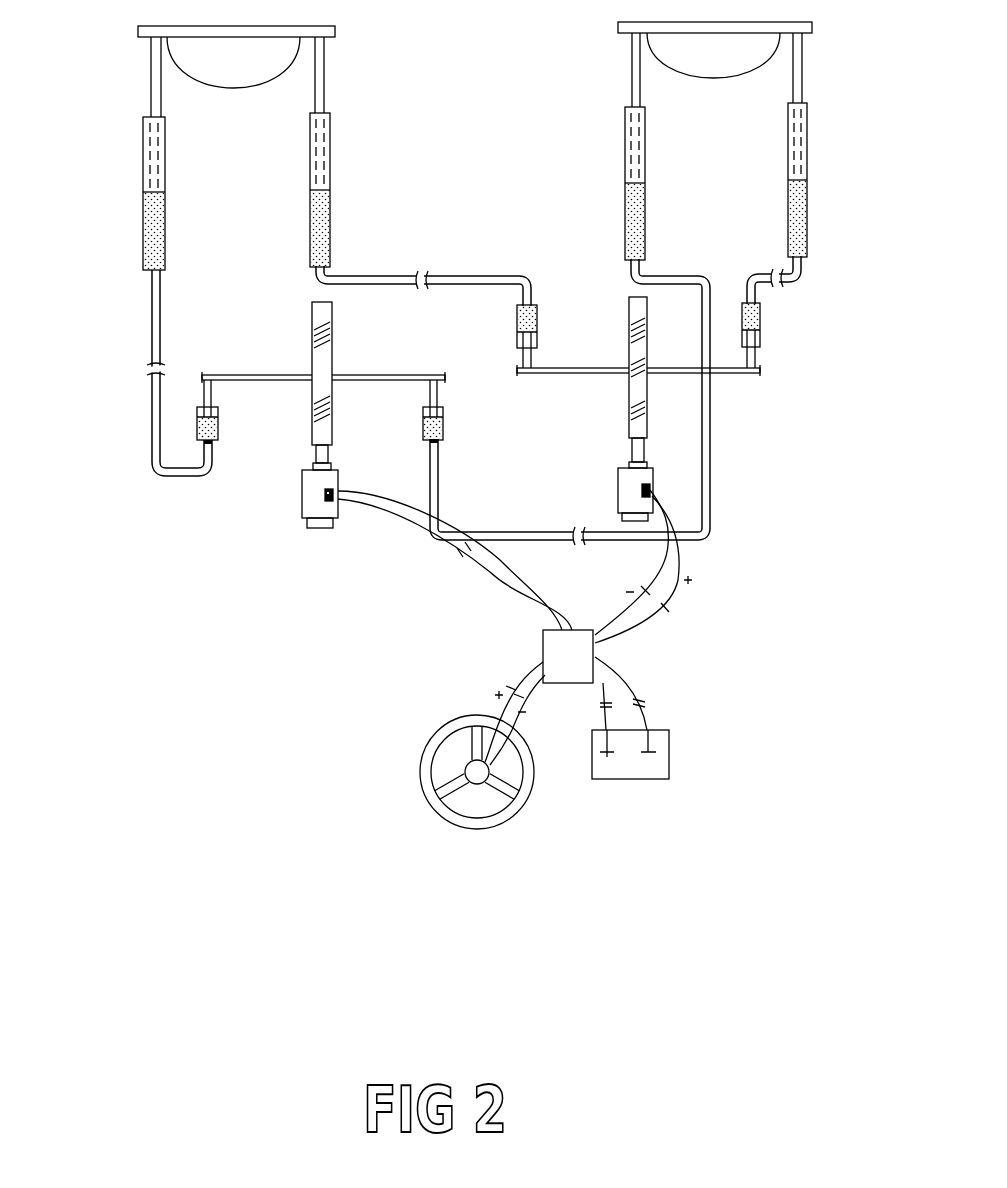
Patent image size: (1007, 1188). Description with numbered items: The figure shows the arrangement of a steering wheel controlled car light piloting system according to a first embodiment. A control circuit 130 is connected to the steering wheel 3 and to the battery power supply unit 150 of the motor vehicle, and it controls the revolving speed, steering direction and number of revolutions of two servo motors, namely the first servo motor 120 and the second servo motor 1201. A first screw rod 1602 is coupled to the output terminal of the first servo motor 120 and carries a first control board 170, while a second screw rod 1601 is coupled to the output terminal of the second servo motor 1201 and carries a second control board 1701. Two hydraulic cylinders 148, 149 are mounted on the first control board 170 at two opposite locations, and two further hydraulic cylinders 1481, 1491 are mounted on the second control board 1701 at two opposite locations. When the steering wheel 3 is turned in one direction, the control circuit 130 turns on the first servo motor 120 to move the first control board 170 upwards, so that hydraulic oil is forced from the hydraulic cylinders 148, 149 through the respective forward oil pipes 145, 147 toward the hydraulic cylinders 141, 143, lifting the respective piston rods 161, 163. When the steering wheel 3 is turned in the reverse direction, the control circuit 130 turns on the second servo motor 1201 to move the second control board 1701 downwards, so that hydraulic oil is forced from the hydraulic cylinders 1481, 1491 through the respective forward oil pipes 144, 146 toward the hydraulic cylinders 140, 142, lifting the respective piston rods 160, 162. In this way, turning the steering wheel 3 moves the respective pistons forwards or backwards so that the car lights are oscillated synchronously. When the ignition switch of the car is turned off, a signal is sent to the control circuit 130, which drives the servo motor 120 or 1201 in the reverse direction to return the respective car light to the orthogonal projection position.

The steering wheel 3 is at (427, 780).
The first servo motor 120 is at (618, 483).
The second servo motor 1201 is at (310, 500).
The control circuit 130 is at (555, 643).
The hydraulic cylinder 140 is at (143, 204).
The hydraulic cylinder 141 is at (330, 128).
The hydraulic cylinder 142 is at (625, 150).
The hydraulic cylinder 143 is at (807, 165).
The forward oil pipe 144 is at (152, 393).
The forward oil pipe 145 is at (335, 280).
The forward oil pipe 146 is at (676, 279).
The forward oil pipe 147 is at (800, 272).
The hydraulic cylinder 148 is at (537, 313).
The hydraulic cylinder 149 is at (760, 322).
The hydraulic cylinder 1481 is at (218, 427).
The hydraulic cylinder 1491 is at (443, 425).
The battery power supply unit 150 is at (655, 762).
The piston rod 160 is at (152, 77).
The piston rod 161 is at (324, 70).
The piston rod 162 is at (632, 78).
The piston rod 163 is at (802, 66).
The second screw rod 1601 is at (331, 347).
The first screw rod 1602 is at (629, 320).
The first control board 170 is at (676, 368).
The second control board 1701 is at (260, 375).